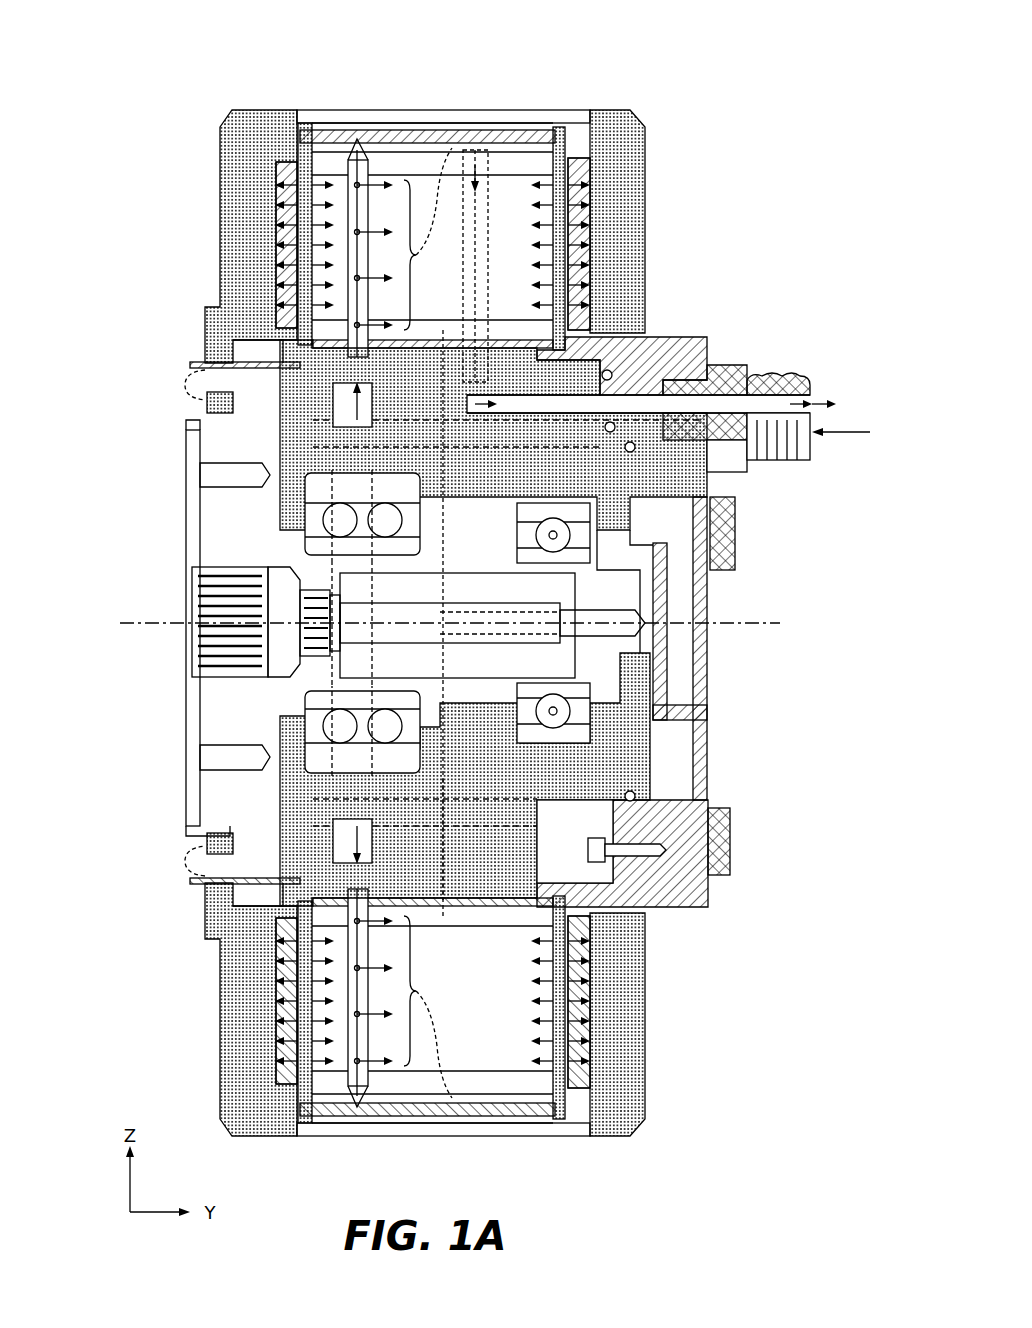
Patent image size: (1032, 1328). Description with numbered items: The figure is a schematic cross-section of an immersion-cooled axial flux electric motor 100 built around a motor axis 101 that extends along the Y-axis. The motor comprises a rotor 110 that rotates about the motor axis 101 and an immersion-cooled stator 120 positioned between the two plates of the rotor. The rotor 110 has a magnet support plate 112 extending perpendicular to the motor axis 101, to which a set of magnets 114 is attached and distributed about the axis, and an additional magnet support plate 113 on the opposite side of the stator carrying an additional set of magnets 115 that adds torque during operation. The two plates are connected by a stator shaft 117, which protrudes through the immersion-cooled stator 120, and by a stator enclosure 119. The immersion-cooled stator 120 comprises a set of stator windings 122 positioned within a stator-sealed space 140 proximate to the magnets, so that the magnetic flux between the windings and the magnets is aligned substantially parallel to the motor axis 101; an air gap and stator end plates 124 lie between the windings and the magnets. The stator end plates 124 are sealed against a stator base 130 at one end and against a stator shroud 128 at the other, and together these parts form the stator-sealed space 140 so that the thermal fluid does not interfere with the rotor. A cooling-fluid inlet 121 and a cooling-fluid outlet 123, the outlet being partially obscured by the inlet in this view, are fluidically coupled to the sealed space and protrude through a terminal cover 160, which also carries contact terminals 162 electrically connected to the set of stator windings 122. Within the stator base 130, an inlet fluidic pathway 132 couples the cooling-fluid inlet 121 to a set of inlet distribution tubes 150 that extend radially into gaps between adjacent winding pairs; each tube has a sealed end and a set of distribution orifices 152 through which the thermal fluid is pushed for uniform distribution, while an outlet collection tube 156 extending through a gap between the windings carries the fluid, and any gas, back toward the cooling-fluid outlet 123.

The immersion-cooled axial flux electric motor 100 is at (203, 70).
The motor axis 101 is at (768, 628).
The rotor 110 is at (218, 520).
The magnet support plate 112 is at (247, 202).
The additional magnet support plate 113 is at (620, 200).
The set of magnets 114 is at (285, 163).
The additional set of magnets 115 is at (580, 170).
The stator shaft 117 is at (212, 538).
The stator enclosure 119 is at (287, 122).
The immersion-cooled stator 120 is at (684, 462).
The cooling-fluid inlet 121 is at (793, 458).
The set of stator windings 122 is at (318, 127).
The cooling-fluid outlet 123 is at (777, 370).
The stator end plates 124 is at (618, 112).
The stator shroud 128 is at (554, 133).
The stator base 130 is at (598, 348).
The inlet fluidic pathway 132 is at (347, 405).
The stator-sealed space 140 is at (512, 186).
The set of inlet distribution tubes 150 is at (373, 128).
The set of distribution orifices 152 is at (407, 128).
The outlet collection tube 156 is at (488, 155).
The terminal cover 160 is at (656, 358).
The contact terminals 162 is at (732, 558).